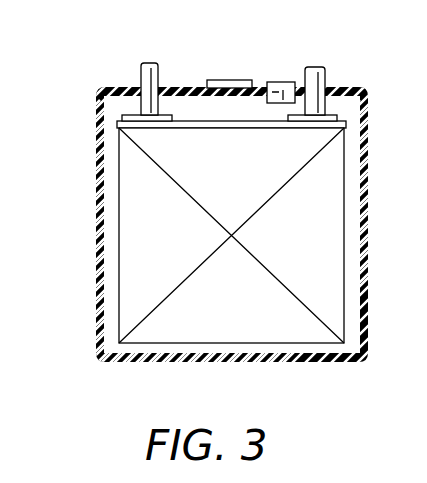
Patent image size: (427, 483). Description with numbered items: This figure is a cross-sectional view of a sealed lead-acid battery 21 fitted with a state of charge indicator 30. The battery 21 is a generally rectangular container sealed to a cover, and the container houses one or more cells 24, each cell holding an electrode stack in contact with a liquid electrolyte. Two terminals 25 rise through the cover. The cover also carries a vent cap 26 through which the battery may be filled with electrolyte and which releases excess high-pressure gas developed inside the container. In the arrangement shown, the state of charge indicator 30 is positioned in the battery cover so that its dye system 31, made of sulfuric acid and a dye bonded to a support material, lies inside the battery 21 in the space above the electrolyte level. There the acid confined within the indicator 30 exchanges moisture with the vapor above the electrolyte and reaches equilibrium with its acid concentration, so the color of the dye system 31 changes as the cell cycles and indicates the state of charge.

The sealed lead-acid battery 21 is at (346, 78).
The cells 24 is at (246, 181).
The terminal post 25 is at (140, 70).
The vent cap 26 is at (217, 78).
The state of charge indicator 30 is at (260, 74).
The dye system 31 is at (265, 97).